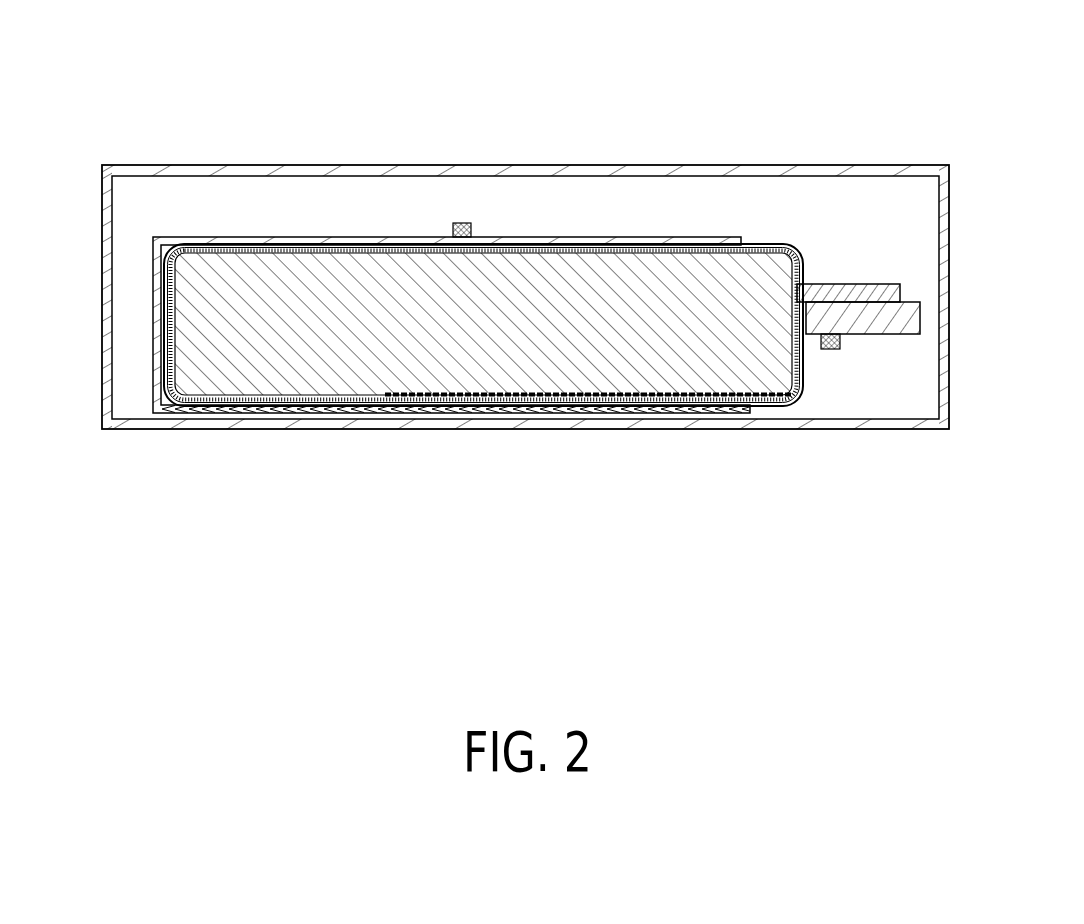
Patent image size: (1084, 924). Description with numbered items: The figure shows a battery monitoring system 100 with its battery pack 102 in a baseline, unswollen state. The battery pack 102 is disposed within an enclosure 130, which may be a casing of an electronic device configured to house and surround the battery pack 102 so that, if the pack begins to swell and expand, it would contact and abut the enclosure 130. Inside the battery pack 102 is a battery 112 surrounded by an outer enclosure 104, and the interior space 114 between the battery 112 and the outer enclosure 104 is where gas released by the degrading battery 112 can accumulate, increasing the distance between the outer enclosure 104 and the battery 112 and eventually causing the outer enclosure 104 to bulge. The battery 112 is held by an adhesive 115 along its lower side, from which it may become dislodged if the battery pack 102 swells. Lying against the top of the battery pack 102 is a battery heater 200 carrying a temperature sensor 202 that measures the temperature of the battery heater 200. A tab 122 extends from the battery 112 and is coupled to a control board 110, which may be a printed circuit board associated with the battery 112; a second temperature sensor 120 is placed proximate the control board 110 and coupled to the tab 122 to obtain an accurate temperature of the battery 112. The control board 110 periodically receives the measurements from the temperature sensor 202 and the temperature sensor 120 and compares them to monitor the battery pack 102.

The battery monitoring system 100 is at (86, 117).
The battery pack 102 is at (460, 297).
The outer enclosure 104 is at (278, 250).
The control board 110 is at (877, 334).
The battery 112 is at (216, 358).
The interior space 114 is at (525, 252).
The adhesive 115 is at (472, 395).
The temperature sensor 120 is at (830, 349).
The tab 122 is at (850, 284).
The enclosure 130 is at (616, 167).
The battery heater 200 is at (338, 242).
The temperature sensor 202 is at (454, 224).